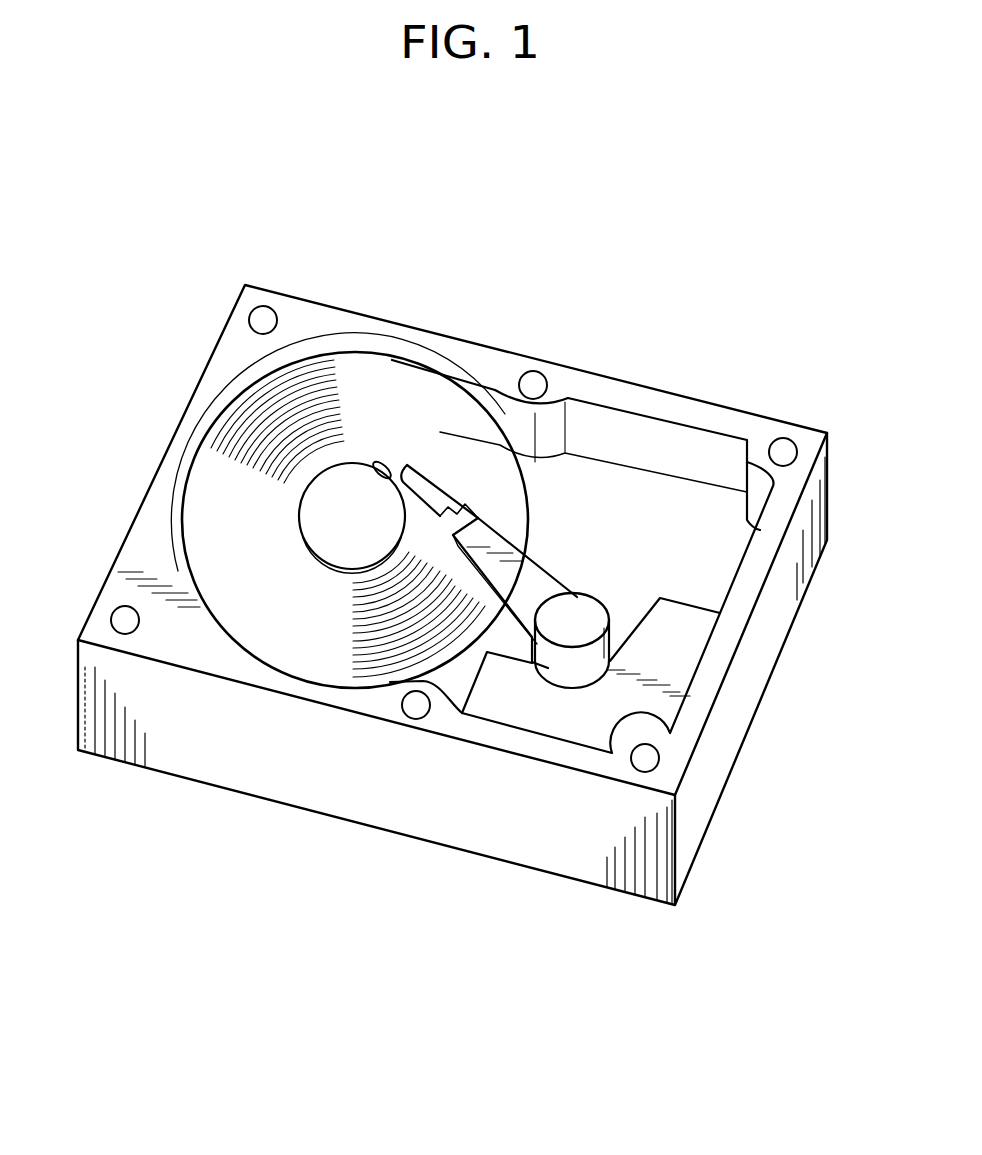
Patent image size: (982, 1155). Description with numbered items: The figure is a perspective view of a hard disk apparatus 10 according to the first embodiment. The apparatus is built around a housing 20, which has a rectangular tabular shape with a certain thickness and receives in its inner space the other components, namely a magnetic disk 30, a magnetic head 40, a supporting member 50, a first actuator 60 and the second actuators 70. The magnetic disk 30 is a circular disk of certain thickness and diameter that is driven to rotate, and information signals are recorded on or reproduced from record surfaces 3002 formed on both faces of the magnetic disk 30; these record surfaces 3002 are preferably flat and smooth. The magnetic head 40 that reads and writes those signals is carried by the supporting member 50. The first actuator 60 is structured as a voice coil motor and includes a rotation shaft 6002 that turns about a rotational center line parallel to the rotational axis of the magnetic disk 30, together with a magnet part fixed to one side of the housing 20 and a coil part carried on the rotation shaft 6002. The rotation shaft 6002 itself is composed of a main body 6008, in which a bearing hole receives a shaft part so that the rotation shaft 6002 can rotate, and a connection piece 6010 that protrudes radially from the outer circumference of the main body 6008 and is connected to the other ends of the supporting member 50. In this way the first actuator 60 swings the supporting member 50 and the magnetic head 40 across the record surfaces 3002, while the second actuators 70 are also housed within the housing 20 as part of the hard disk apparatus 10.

The hard disk apparatus 10 is at (291, 246).
The housing 20 is at (318, 303).
The magnetic disk 30 is at (445, 369).
The record surfaces 3002 is at (372, 388).
The magnetic head 40 is at (432, 478).
The supporting member 50 is at (450, 513).
The first actuator 60 is at (570, 677).
The second actuators 70 is at (530, 573).
The rotation shaft 6002 is at (617, 618).
The main body 6008 is at (590, 585).
The connection piece 6010 is at (582, 603).